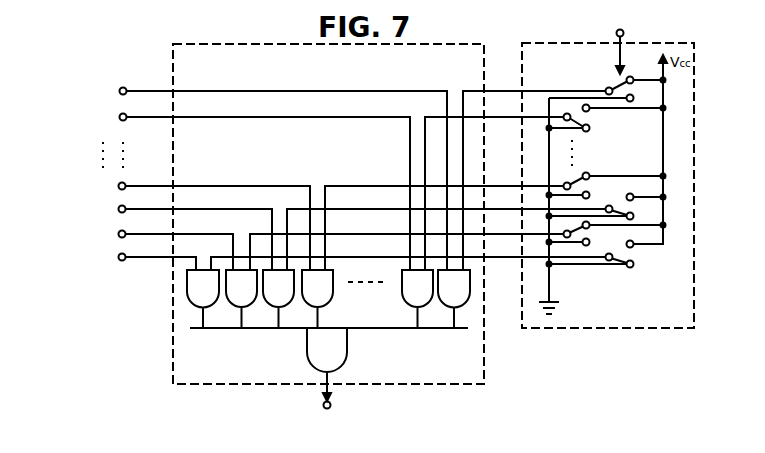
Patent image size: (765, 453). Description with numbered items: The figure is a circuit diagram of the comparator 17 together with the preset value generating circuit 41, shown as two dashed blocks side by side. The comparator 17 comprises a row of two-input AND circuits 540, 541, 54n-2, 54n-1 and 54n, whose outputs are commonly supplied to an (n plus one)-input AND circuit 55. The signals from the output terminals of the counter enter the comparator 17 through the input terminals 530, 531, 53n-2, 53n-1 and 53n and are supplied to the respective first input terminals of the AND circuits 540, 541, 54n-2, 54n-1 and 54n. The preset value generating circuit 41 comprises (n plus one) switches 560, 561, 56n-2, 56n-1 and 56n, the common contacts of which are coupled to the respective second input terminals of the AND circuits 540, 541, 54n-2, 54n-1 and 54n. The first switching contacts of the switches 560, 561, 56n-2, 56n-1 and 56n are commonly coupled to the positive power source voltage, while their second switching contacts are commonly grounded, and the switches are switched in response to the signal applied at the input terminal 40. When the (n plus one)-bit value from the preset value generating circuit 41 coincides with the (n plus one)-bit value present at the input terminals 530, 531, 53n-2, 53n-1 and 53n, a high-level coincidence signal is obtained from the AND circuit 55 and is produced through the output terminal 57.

The comparator 17 is at (193, 42).
The input terminal 40 is at (624, 33).
The preset value generating circuit 41 is at (546, 330).
The input terminal 530 is at (124, 87).
The input terminal 531 is at (129, 120).
The input terminal 53n-2 is at (118, 206).
The input terminal 53n-1 is at (118, 231).
The input terminal 53n is at (122, 261).
The 2-input AND circuit 54n is at (187, 296).
The 2-input AND circuit 54n-1 is at (232, 308).
The 2-input AND circuit 54n-2 is at (272, 308).
The 2-input AND circuit 541 is at (401, 290).
The 2-input AND circuit 540 is at (471, 291).
The (n+1)-input AND circuit 55 is at (347, 352).
The output terminal 57 is at (331, 405).
The switch 560 is at (619, 79).
The switch 561 is at (592, 115).
The switch 56n-2 is at (622, 203).
The switch 56n-1 is at (578, 248).
The switch 56n is at (636, 254).